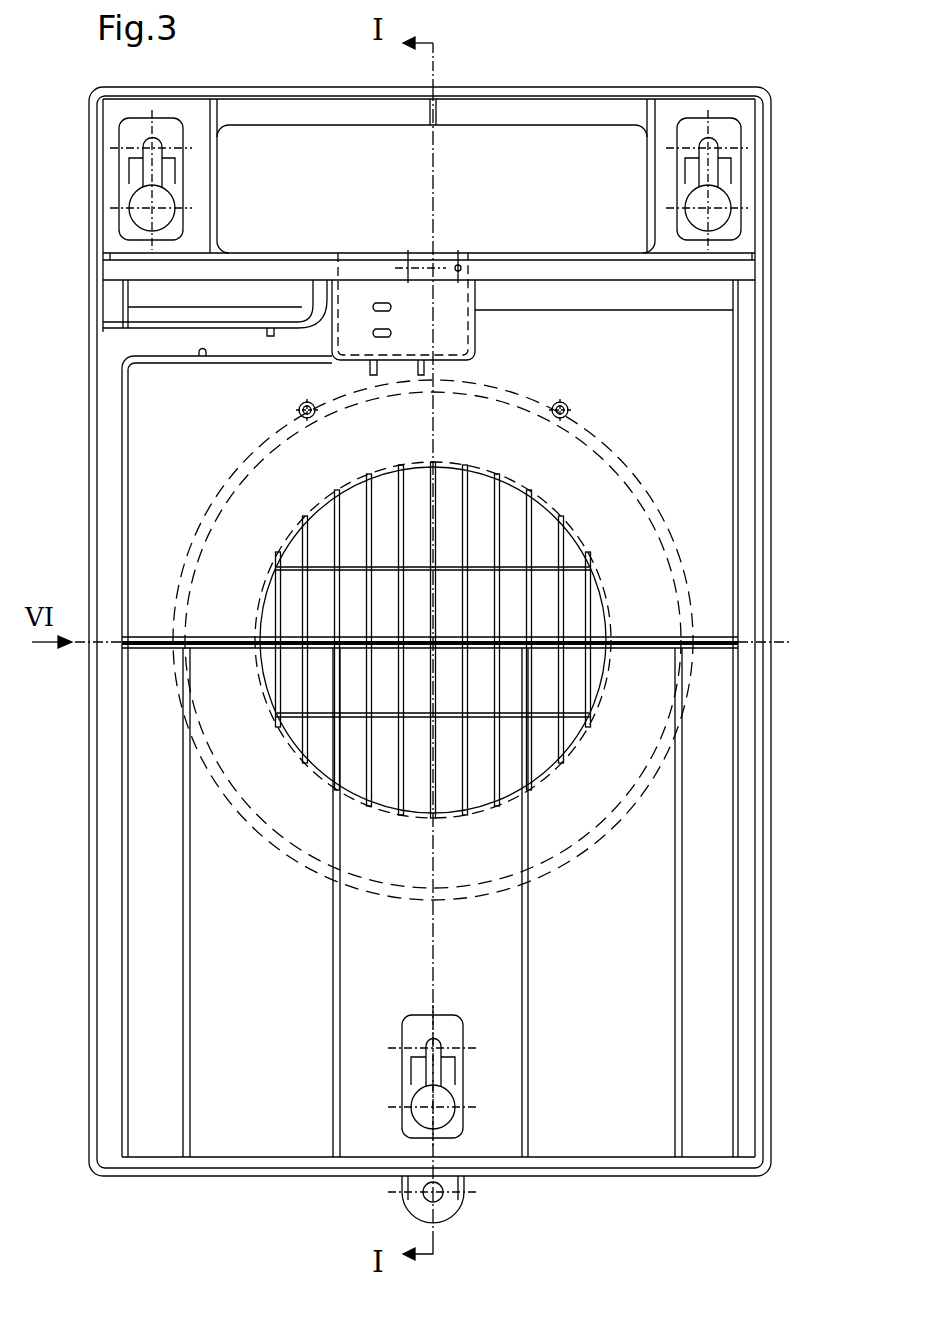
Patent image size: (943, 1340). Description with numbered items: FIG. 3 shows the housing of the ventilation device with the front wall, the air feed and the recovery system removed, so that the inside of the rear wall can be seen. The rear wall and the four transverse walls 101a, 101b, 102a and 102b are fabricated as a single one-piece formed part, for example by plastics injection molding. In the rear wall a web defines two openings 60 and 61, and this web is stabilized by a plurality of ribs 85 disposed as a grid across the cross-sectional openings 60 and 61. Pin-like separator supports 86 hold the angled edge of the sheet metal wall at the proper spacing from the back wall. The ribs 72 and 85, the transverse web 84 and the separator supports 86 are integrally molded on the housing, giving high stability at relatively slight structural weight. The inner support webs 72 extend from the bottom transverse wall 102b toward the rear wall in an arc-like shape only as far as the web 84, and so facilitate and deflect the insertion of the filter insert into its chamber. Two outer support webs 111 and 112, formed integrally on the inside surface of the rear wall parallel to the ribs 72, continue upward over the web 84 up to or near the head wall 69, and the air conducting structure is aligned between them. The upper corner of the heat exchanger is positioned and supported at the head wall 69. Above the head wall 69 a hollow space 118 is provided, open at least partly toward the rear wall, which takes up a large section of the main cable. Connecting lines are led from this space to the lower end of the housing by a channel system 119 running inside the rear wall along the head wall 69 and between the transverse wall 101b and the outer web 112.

The opening 60 is at (352, 600).
The opening 61 is at (470, 755).
The head wall 69 is at (497, 264).
The support webs 72 is at (332, 1024).
The transverse web 84 is at (660, 642).
The ribs 85 is at (560, 589).
The separator supports 86 is at (298, 409).
The transverse wall 101a is at (88, 458).
The transverse wall 101b is at (770, 814).
The transverse wall 102a is at (503, 88).
The bottom transverse wall 102b is at (282, 1170).
The outer support web 111 is at (121, 963).
The outer support web 112 is at (737, 969).
The hollow space 118 is at (321, 172).
The channel system 119 is at (108, 373).